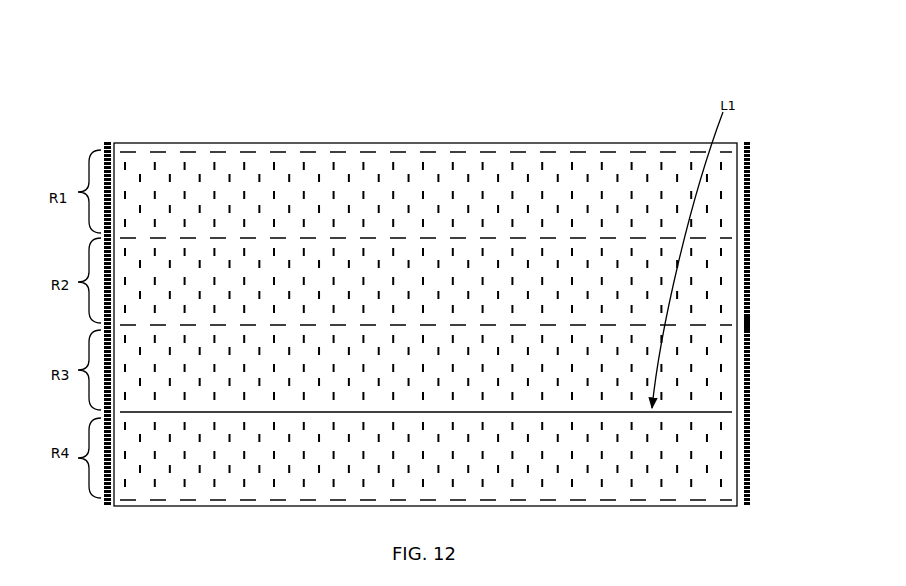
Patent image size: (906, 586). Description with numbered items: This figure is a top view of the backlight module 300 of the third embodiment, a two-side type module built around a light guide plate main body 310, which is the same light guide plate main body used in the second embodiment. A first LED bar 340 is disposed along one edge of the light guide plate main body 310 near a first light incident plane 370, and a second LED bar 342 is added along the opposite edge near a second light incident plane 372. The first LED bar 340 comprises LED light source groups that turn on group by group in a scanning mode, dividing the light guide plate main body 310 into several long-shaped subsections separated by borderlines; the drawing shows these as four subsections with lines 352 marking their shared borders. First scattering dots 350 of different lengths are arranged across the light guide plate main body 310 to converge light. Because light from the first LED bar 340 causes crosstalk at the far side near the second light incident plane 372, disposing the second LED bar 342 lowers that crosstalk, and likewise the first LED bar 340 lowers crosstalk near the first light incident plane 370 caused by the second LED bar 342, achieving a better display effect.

The backlight module 300 is at (83, 39).
The light guide plate main body 310 is at (561, 158).
The first LED bar 340 is at (102, 158).
The second LED bar 342 is at (749, 157).
The first scattering dots 350 is at (438, 180).
The region boundary lines 352 is at (162, 238).
The first light incident plane 370 is at (99, 326).
The second light incident plane 372 is at (763, 322).